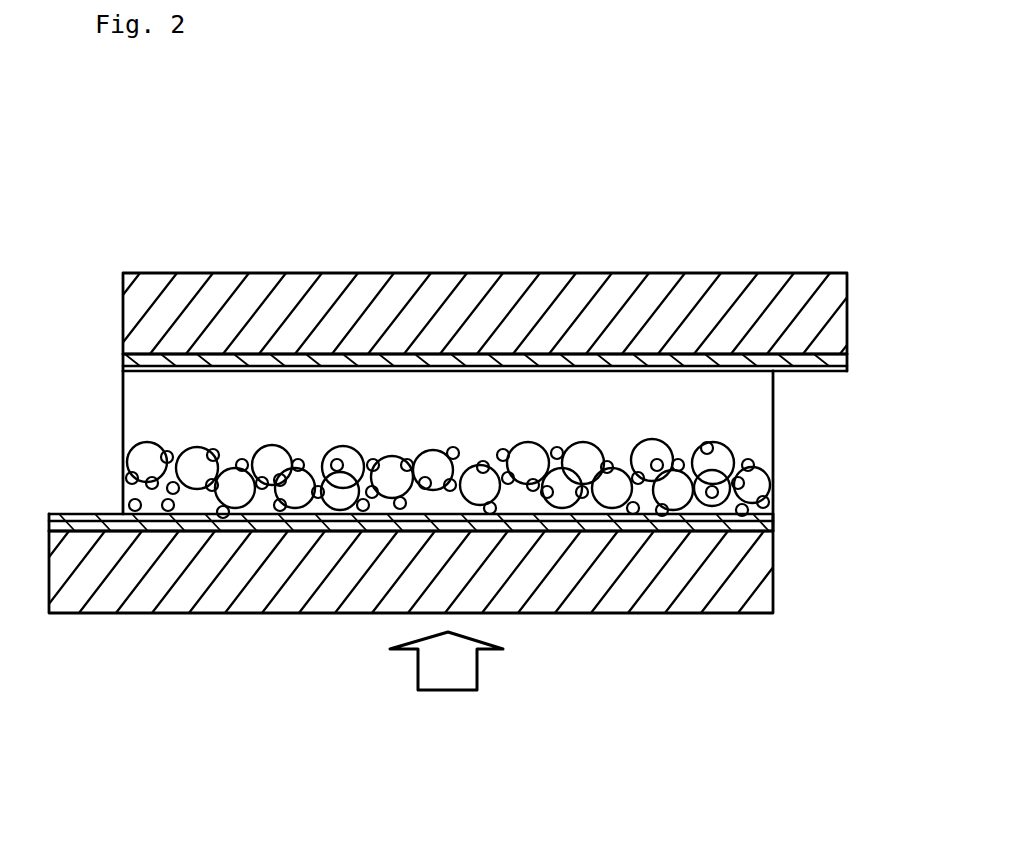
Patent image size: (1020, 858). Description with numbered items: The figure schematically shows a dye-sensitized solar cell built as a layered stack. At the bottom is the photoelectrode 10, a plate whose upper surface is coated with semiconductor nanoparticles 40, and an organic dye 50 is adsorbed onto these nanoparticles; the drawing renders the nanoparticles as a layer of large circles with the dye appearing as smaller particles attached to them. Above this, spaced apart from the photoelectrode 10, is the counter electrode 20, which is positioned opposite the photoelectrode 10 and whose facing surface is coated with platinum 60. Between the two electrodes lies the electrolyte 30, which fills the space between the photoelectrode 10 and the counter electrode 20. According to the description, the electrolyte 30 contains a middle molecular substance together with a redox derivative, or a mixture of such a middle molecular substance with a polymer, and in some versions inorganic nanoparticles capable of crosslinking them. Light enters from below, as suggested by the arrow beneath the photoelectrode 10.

The photoelectrode 10 is at (707, 583).
The counter electrode 20 is at (548, 303).
The electrolyte 30 is at (742, 433).
The semiconductor nanoparticles 40 is at (147, 465).
The organic dye 50 is at (214, 456).
The platinum 60 is at (817, 375).